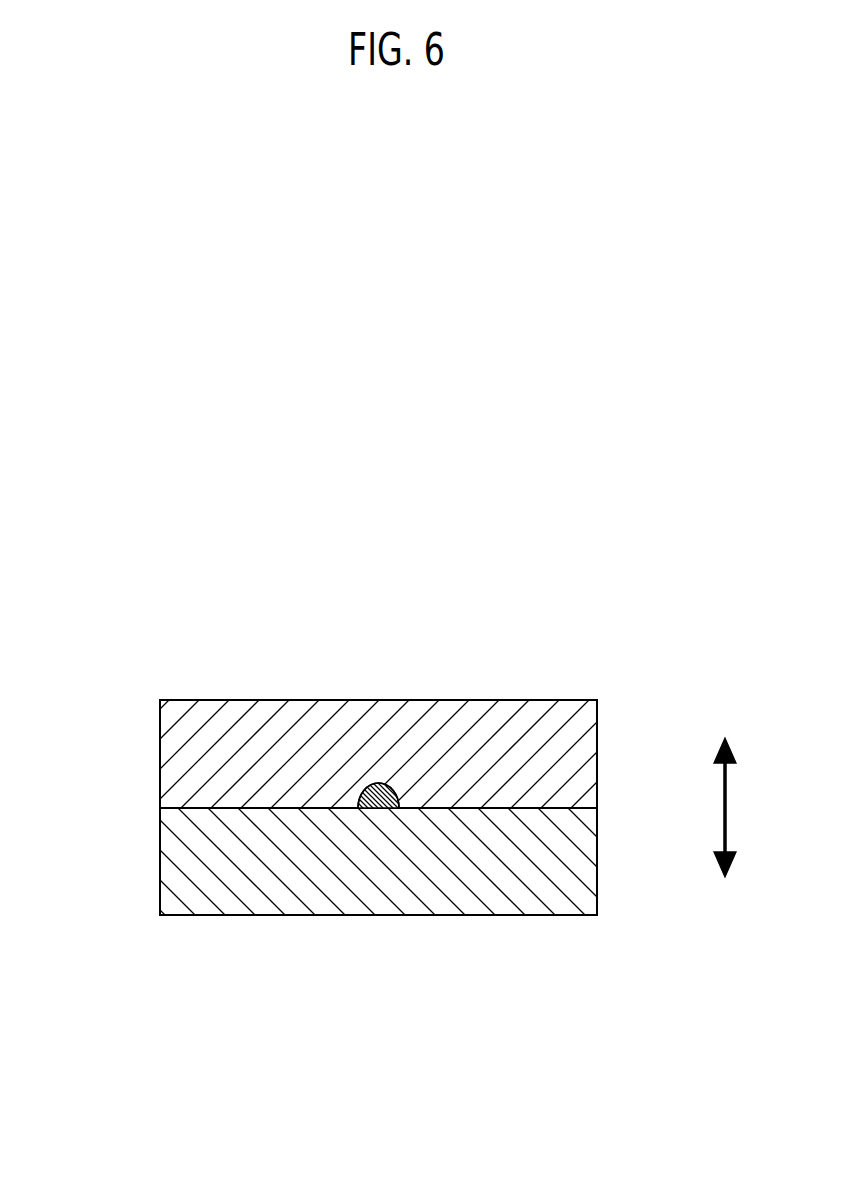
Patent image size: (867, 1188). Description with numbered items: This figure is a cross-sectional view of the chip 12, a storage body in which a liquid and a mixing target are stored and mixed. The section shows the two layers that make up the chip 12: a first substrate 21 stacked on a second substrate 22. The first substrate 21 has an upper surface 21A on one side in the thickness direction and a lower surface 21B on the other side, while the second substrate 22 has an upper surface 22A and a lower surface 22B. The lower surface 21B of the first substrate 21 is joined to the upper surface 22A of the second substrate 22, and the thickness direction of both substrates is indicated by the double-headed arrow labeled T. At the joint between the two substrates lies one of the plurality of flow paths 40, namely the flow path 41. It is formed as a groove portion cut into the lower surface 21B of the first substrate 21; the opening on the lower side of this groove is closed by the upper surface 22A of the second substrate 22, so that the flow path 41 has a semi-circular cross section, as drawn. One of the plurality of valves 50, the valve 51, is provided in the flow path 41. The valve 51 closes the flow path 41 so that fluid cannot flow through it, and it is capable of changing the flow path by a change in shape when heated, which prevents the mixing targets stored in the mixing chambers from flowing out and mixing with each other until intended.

The chip 12 is at (95, 618).
The first substrate 21 is at (170, 747).
The second substrate 22 is at (168, 872).
The upper surface 21A is at (573, 698).
The lower surface 21B is at (588, 810).
The upper surface 22A is at (560, 803).
The lower surface 22B is at (563, 917).
The flow paths 40 is at (378, 725).
The flow path 41 is at (379, 782).
The valves 50 is at (433, 699).
The valve 51 is at (393, 797).
The T direction T is at (727, 806).